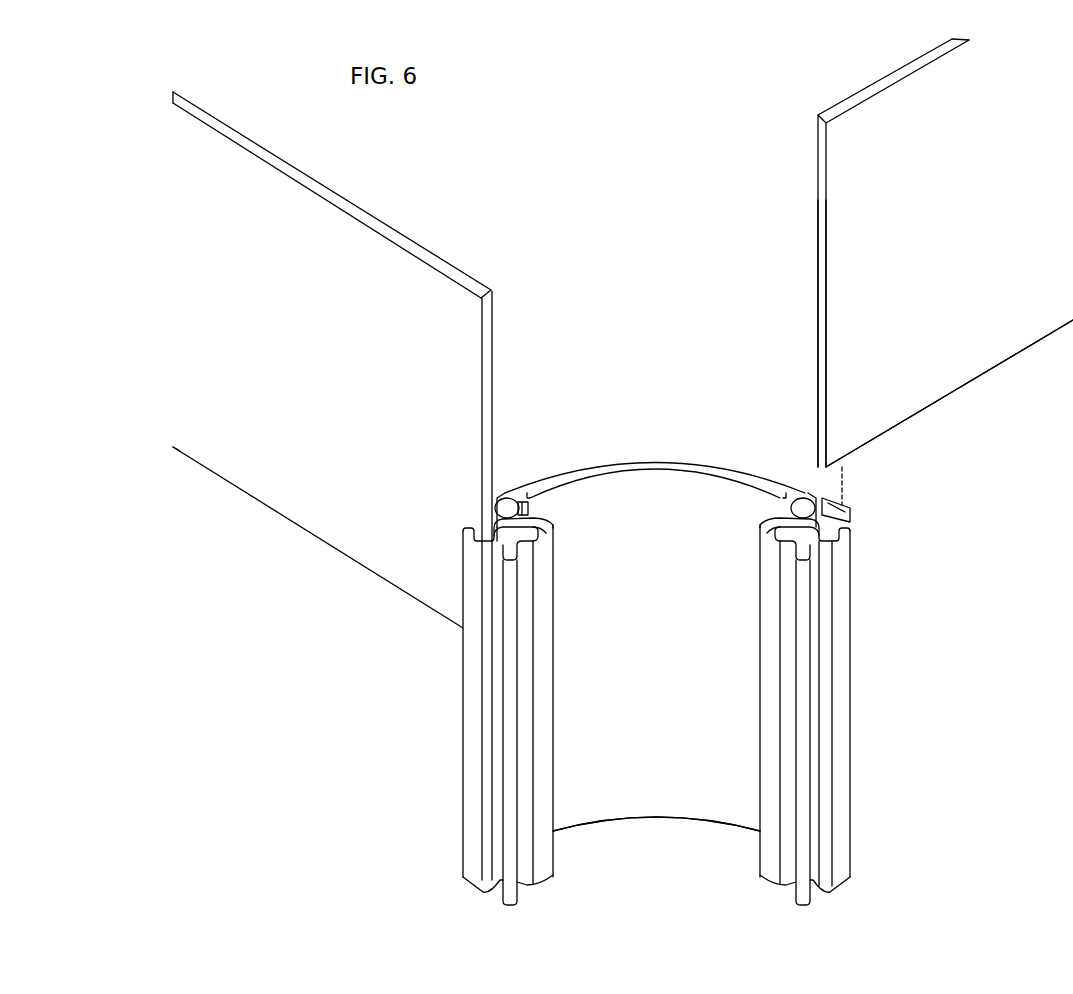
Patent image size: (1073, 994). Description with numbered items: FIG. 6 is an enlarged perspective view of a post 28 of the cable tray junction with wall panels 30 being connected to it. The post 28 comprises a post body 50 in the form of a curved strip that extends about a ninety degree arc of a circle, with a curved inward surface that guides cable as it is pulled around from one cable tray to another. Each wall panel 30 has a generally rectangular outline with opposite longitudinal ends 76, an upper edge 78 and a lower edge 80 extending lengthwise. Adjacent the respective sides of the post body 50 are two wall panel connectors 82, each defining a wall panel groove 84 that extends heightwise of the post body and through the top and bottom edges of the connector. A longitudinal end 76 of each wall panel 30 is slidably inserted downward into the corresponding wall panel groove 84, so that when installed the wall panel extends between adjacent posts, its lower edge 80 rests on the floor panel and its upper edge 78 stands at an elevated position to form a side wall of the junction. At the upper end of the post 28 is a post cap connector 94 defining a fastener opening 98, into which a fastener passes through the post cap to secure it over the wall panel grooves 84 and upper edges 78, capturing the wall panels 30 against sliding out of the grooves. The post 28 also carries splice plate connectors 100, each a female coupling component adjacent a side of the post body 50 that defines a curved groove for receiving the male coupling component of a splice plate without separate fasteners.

The post 28 is at (930, 625).
The wall panel 30 is at (248, 500).
The post body 50 is at (663, 462).
The longitudinal end 76 is at (490, 320).
The upper edge 78 is at (400, 233).
The lower edge 80 is at (325, 545).
The wall panel connector 82 is at (467, 660).
The wall panel groove 84 is at (478, 521).
The post cap connector 94 is at (500, 490).
The fastener opening 98 is at (506, 512).
The splice plate connector 100 is at (518, 637).